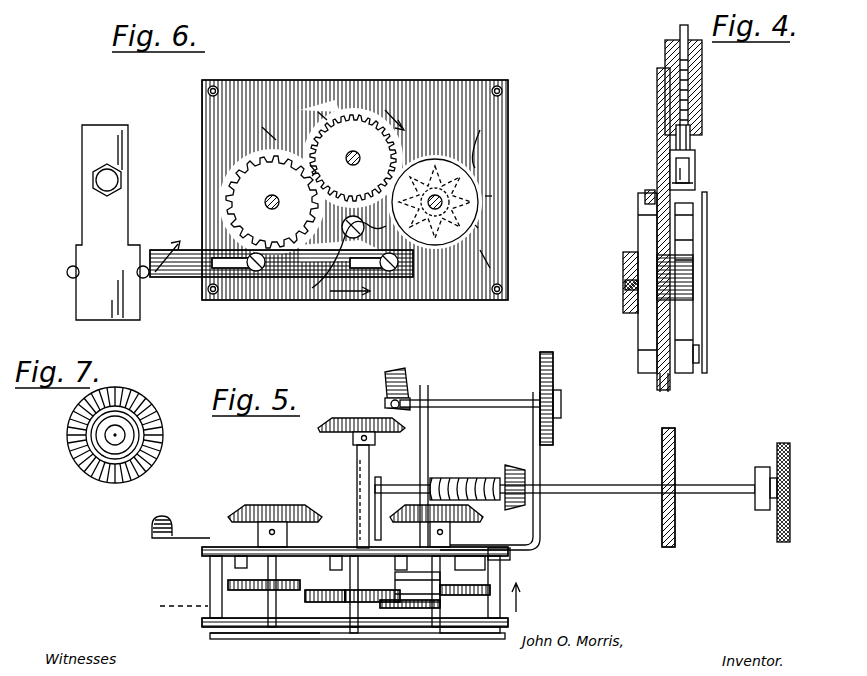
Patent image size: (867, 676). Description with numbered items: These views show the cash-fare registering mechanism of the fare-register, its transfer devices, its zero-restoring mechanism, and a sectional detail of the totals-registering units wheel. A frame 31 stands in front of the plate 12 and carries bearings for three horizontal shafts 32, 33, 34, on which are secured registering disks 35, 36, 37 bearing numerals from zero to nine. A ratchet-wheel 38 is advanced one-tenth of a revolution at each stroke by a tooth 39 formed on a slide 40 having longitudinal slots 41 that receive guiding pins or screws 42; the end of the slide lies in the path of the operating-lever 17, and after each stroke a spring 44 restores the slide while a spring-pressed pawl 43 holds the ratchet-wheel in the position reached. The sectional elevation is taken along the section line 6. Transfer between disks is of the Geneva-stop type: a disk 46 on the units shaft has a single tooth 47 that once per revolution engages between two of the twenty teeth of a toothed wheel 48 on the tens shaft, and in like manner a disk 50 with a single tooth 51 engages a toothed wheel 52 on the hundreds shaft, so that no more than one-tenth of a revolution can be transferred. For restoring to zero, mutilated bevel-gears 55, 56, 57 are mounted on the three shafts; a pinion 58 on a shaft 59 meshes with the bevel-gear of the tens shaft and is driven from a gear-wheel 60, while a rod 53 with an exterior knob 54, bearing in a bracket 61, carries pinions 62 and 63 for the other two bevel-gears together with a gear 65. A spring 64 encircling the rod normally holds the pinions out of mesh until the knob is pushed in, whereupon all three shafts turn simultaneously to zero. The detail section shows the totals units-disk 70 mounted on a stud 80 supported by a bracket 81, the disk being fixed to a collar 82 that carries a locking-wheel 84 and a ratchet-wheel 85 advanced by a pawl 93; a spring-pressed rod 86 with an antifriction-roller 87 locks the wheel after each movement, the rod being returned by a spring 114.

In FIG. 5, the section line 6 is at (337, 599).
In FIG. 4, the plate 12 is at (657, 158).
In FIG. 6, the operating-lever 17 is at (88, 300).
In FIG. 5, the frame 31 is at (215, 556).
In FIG. 6, the shaft 32 is at (440, 194).
In FIG. 5, the shaft 32 is at (436, 627).
In FIG. 6, the shaft 33 is at (353, 150).
In FIG. 5, the shaft 33 is at (353, 627).
In FIG. 6, the shaft 34 is at (272, 194).
In FIG. 5, the shaft 34 is at (272, 627).
In FIG. 5, the units-disk 35 is at (465, 638).
In FIG. 5, the registering disk 36 is at (376, 633).
In FIG. 6, the registering disk 37 is at (490, 200).
In FIG. 5, the registering disk 37 is at (232, 640).
In FIG. 6, the ratchet-wheel 38 is at (490, 268).
In FIG. 5, the ratchet-wheel 38 is at (470, 556).
In FIG. 6, the tooth 39 is at (420, 253).
In FIG. 5, the tooth 39 is at (402, 556).
In FIG. 6, the slide 40 is at (300, 278).
In FIG. 5, the slide 40 is at (180, 548).
In FIG. 6, the longitudinal slots 41 is at (365, 268).
In FIG. 6, the guiding screws 42 is at (391, 272).
In FIG. 5, the guiding screws 42 is at (242, 556).
In FIG. 6, the spring-pressed pawl 43 is at (480, 168).
In FIG. 5, the spring-pressed pawl 43 is at (510, 556).
In FIG. 6, the spring 44 is at (320, 290).
In FIG. 5, the spring 44 is at (336, 556).
In FIG. 6, the disk 46 is at (478, 228).
In FIG. 5, the disk 46 is at (490, 588).
In FIG. 6, the single tooth 47 is at (405, 126).
In FIG. 5, the single tooth 47 is at (422, 600).
In FIG. 6, the toothed wheel 48 is at (330, 125).
In FIG. 5, the toothed wheel 48 is at (362, 602).
In FIG. 6, the disk 50 is at (309, 103).
In FIG. 5, the disk 50 is at (417, 587).
In FIG. 6, the single tooth 51 is at (308, 164).
In FIG. 5, the single tooth 51 is at (312, 592).
In FIG. 6, the toothed wheel 52 is at (256, 132).
In FIG. 5, the toothed wheel 52 is at (264, 596).
In FIG. 5, the rod 53 is at (625, 495).
In FIG. 5, the knob 54 is at (772, 512).
In FIG. 7, the mutilated bevel-gear 55 is at (160, 440).
In FIG. 5, the mutilated bevel-gear 55 is at (468, 483).
In FIG. 5, the mutilated bevel-gear 56 is at (345, 418).
In FIG. 5, the mutilated bevel-gear 57 is at (278, 505).
In FIG. 5, the pinion 58 is at (400, 385).
In FIG. 5, the shaft 59 is at (470, 400).
In FIG. 5, the gear-wheel 60 is at (553, 358).
In FIG. 5, the bracket 61 is at (380, 480).
In FIG. 5, the pinion 62 is at (512, 470).
In FIG. 5, the pinion 63 is at (357, 472).
In FIG. 5, the spring 64 is at (448, 480).
In FIG. 5, the gear 65 is at (663, 535).
In FIG. 4, the units-disk 70 is at (707, 220).
In FIG. 4, the stud 80 is at (628, 285).
In FIG. 4, the bracket 81 is at (623, 262).
In FIG. 4, the collar 82 is at (693, 272).
In FIG. 4, the locking-wheel 84 is at (690, 320).
In FIG. 4, the ratchet-wheel 85 is at (648, 325).
In FIG. 4, the spring-pressed rod 86 is at (690, 142).
In FIG. 4, the antifriction-roller 87 is at (695, 172).
In FIG. 4, the pawl 93 is at (645, 192).
In FIG. 4, the spring 114 is at (690, 95).